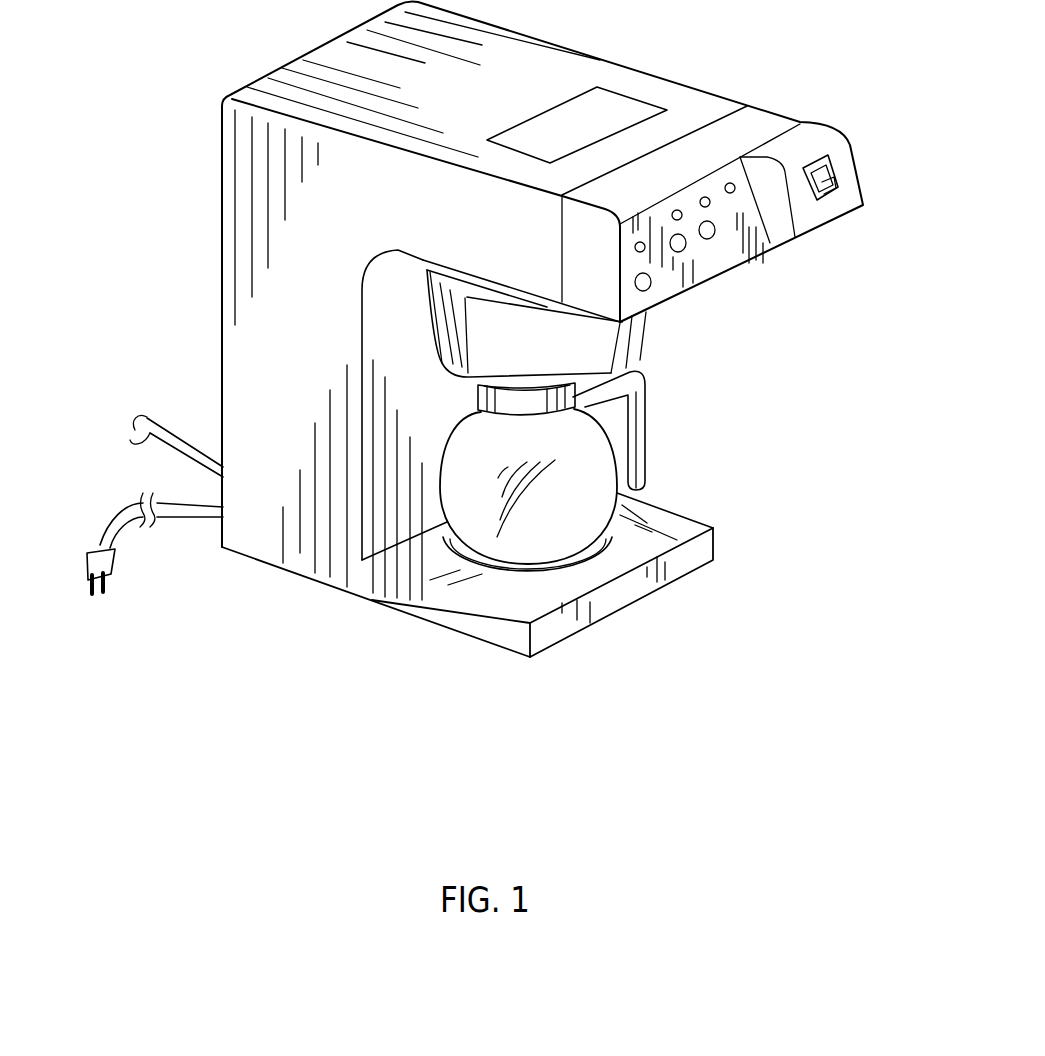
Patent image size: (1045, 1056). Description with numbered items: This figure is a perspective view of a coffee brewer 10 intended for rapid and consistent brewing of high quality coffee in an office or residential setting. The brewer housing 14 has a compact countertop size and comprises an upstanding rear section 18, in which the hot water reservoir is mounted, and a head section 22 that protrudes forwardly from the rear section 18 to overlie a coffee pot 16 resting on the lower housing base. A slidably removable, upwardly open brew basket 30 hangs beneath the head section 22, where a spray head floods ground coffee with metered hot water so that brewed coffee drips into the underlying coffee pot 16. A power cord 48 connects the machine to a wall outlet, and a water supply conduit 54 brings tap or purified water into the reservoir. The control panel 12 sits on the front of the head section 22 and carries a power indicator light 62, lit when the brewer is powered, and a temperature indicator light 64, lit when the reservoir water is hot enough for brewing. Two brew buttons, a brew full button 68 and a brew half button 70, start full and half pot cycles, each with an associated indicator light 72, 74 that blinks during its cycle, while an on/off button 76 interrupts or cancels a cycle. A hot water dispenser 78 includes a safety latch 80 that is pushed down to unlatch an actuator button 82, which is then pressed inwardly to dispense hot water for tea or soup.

The coffee brewer 10 is at (327, 648).
The control panel 12 is at (740, 267).
The brewer housing 14 is at (243, 233).
The coffee pot 16 is at (517, 557).
The rear section 18 is at (232, 352).
The head section 22 is at (670, 92).
The brew basket 30 is at (623, 345).
The power cord 48 is at (108, 527).
The water supply conduit 54 is at (143, 442).
The power indicator light 62 is at (634, 244).
The temperature indicator light 64 is at (726, 184).
The brew full button 68 is at (684, 250).
The brew half button 70 is at (714, 235).
The indicator light 72 is at (673, 211).
The indicator light 74 is at (701, 198).
The on/off button 76 is at (649, 289).
The hot water dispenser 78 is at (870, 151).
The safety latch 80 is at (834, 184).
The actuator button 82 is at (830, 168).